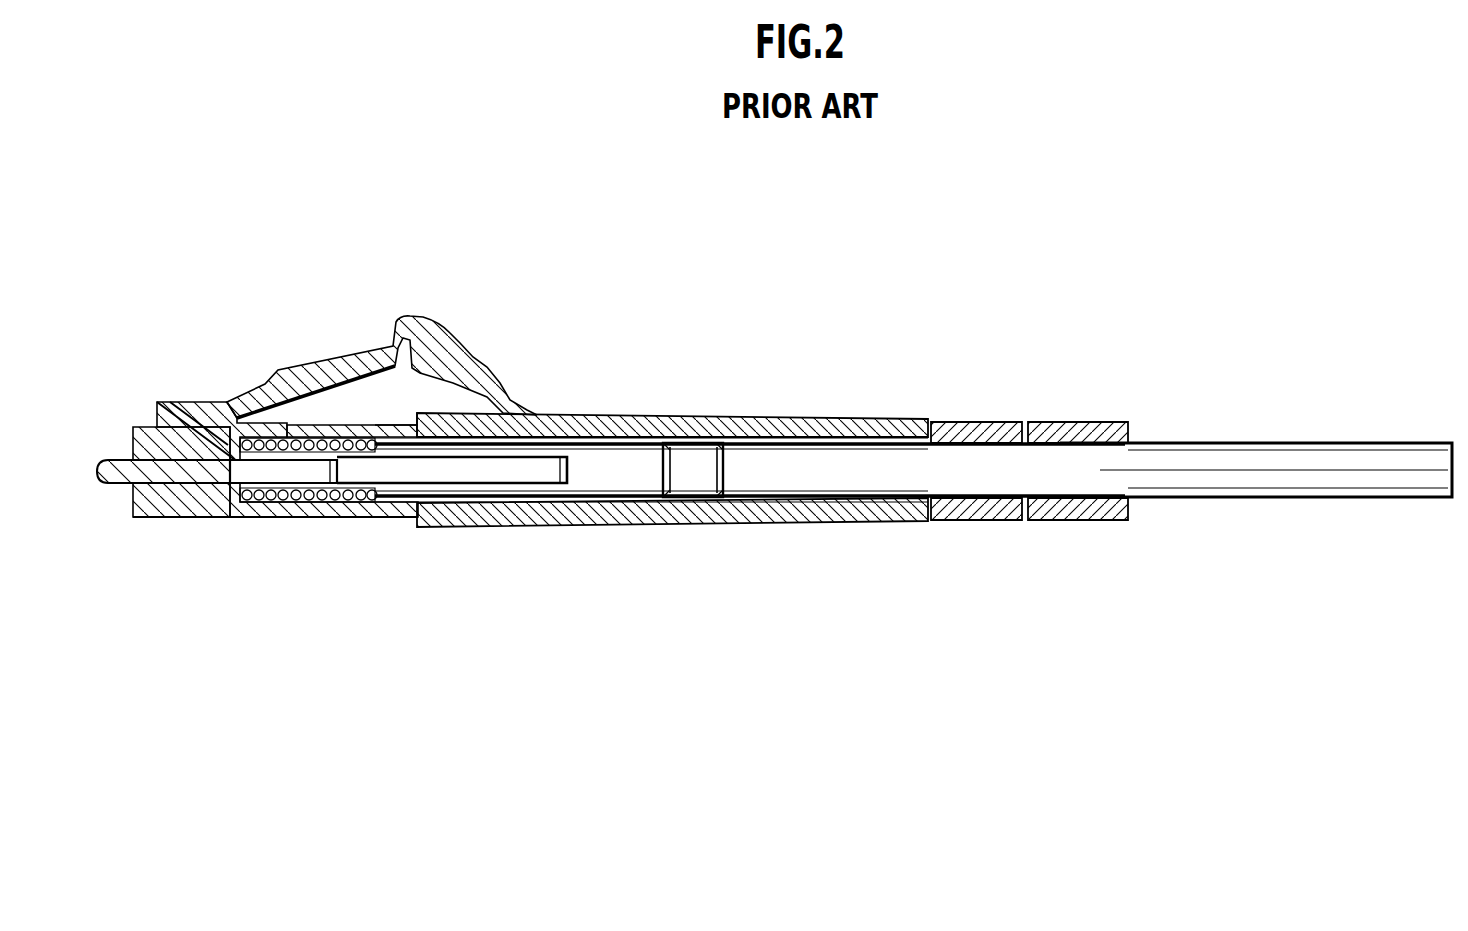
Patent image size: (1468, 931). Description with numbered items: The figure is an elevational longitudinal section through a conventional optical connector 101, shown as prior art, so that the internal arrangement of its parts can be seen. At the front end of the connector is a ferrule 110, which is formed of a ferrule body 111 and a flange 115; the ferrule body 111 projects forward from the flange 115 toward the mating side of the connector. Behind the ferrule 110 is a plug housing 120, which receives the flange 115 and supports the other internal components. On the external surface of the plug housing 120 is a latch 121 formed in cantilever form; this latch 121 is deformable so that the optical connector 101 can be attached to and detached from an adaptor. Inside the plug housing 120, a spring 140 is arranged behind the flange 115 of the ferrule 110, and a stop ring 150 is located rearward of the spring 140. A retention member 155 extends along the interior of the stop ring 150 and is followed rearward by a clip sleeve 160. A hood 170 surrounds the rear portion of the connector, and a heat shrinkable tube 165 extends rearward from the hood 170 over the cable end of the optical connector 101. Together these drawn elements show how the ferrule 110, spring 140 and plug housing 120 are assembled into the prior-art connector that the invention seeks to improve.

The optical connector 101 is at (862, 314).
The ferrule 110 is at (225, 596).
The ferrule body 111 is at (124, 487).
The flange 115 is at (202, 517).
The plug housing 120 is at (285, 517).
The latch 121 is at (347, 370).
The spring 140 is at (347, 517).
The stop ring 150 is at (470, 514).
The retention member 155 is at (528, 500).
The clip sleeve 160 is at (658, 527).
The heat shrinkable tube 165 is at (1260, 499).
The hood 170 is at (865, 504).